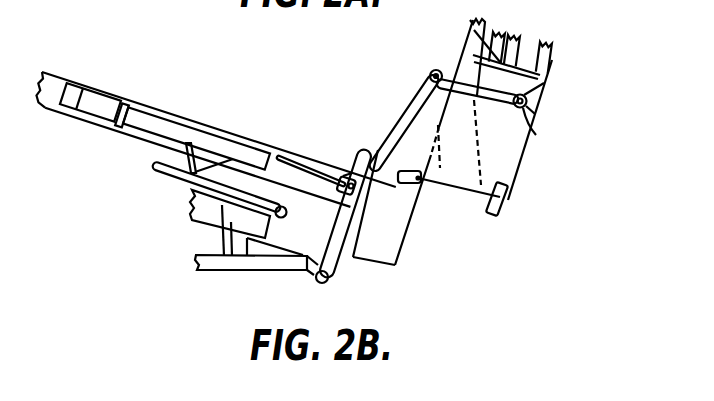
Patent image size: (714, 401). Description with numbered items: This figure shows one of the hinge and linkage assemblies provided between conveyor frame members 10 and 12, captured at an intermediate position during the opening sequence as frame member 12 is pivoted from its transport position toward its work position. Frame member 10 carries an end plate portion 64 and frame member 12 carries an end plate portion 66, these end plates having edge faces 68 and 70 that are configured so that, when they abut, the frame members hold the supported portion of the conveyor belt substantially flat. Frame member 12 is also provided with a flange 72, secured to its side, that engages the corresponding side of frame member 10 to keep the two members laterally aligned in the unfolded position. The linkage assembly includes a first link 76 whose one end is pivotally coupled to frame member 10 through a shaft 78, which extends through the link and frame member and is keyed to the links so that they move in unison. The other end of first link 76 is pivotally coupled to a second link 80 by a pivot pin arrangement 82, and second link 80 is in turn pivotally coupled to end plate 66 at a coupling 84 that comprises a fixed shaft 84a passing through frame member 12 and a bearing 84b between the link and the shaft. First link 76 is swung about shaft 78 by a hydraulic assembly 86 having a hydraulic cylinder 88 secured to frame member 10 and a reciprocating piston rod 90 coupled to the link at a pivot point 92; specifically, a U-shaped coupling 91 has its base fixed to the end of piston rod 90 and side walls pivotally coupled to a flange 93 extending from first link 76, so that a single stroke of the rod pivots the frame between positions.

The frame member 10 is at (180, 265).
The frame member 12 is at (552, 22).
The end plate portion 64 is at (385, 254).
The end plate portion 66 is at (552, 64).
The edge face 68 is at (407, 240).
The edge face 70 is at (457, 197).
The flange 72 is at (500, 212).
The first link 76 is at (402, 117).
The shaft 78 is at (317, 284).
The second link 80 is at (463, 67).
The pivot pin arrangement 82 is at (430, 77).
The coupling 84 is at (536, 108).
The fixed shaft 84a is at (536, 135).
The bearing 84b is at (526, 91).
The hydraulic assembly 86 is at (180, 105).
The hydraulic cylinder 88 is at (208, 125).
The piston rod 90 is at (297, 160).
The U-shaped coupling 91 is at (350, 174).
The pivot point 92 is at (353, 177).
The flange 93 is at (360, 266).